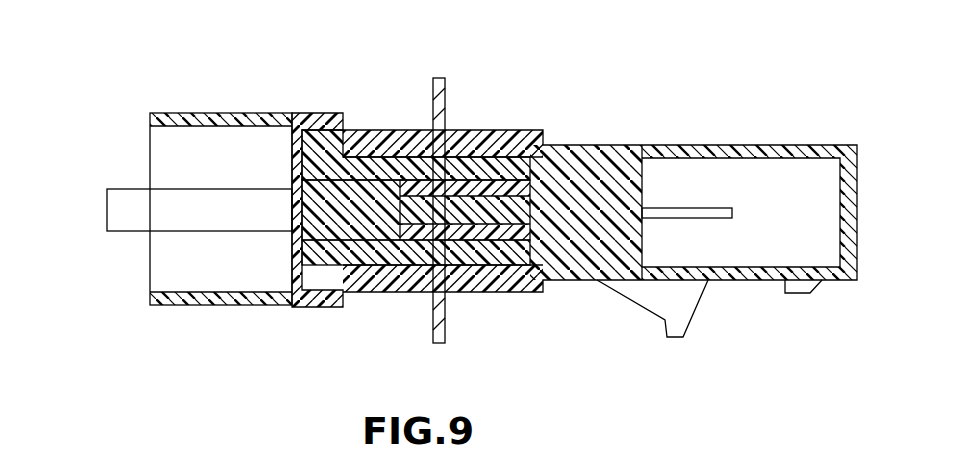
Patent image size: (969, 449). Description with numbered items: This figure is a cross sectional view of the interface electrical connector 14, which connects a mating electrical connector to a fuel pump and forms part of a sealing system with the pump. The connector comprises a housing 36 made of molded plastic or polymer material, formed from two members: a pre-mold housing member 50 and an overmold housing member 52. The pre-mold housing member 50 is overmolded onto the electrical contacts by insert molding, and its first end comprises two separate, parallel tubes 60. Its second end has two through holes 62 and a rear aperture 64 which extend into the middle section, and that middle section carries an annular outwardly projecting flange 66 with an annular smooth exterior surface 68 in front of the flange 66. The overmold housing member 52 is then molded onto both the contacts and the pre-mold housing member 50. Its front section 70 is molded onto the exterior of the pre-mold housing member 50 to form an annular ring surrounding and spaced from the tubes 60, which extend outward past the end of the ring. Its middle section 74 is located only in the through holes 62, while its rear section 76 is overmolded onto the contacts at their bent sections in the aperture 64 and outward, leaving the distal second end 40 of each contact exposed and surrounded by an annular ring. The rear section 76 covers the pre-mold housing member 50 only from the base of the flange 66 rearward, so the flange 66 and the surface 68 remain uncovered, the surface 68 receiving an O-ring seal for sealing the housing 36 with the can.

The interface electrical connector 14 is at (730, 86).
The front section 70 is at (172, 113).
The tubes 60 is at (122, 214).
The pre-mold housing member 50 is at (288, 302).
The annular smooth exterior surface 68 is at (393, 130).
The middle section 74 is at (328, 168).
The through holes 62 is at (368, 160).
The rear aperture 64 is at (493, 232).
The flange 66 is at (444, 80).
The housing 36 is at (531, 131).
The rear section 76 is at (800, 146).
The second end 40 is at (734, 213).
The overmold housing member 52 is at (692, 330).